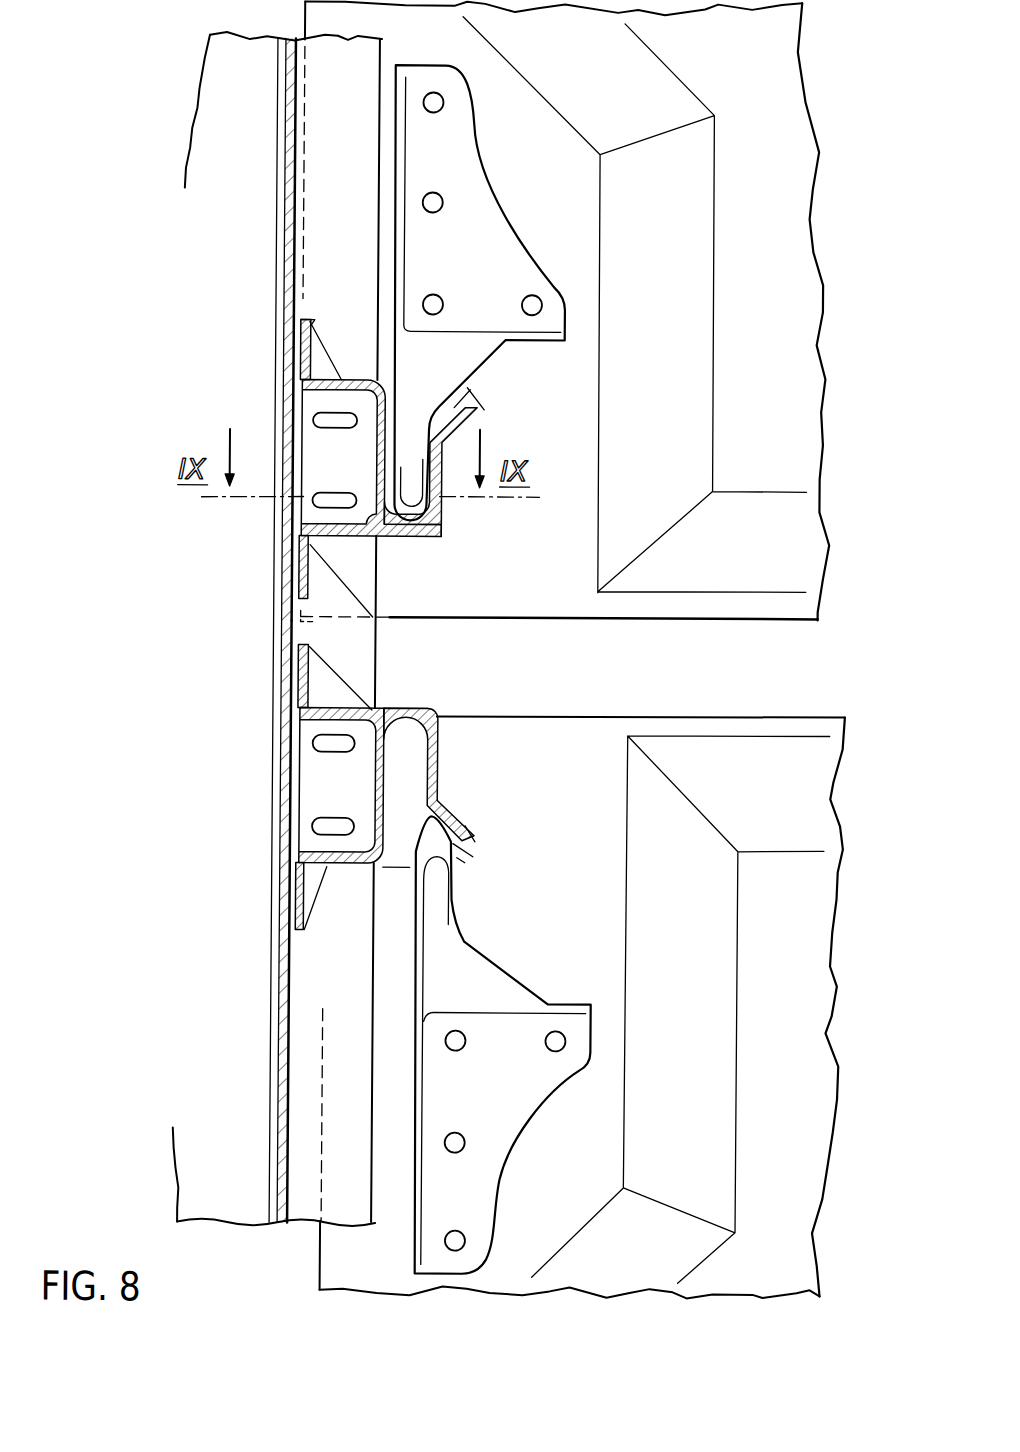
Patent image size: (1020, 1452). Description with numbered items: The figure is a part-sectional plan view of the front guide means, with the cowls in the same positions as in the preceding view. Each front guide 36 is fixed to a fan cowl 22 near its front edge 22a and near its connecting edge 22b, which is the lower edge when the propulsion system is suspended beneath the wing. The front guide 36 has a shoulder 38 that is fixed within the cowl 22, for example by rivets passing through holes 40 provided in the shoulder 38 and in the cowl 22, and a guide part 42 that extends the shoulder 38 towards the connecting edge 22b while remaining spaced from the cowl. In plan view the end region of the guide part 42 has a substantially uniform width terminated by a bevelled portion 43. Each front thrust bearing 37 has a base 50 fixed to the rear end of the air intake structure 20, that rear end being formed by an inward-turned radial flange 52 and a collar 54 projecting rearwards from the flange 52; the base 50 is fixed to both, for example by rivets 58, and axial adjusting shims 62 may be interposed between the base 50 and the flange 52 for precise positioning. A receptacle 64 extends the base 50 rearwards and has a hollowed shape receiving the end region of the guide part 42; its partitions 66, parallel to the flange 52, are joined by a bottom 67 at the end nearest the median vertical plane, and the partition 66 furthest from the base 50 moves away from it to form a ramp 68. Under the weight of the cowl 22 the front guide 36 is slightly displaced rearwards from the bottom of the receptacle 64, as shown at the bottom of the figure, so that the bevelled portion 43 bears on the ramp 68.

The air intake structure 20 is at (240, 40).
The fan cowl 22 is at (742, 622).
The front edge 22a is at (322, 1270).
The connecting edge 22b is at (577, 620).
The front guide 36 is at (575, 302).
The front thrust bearing 37 is at (387, 550).
The shoulder 38 is at (467, 192).
The holes 40 is at (426, 198).
The guide part 42 is at (441, 494).
The bevelled portion 43 is at (461, 850).
The base 50 is at (325, 571).
The radial flange 52 is at (291, 165).
The collar 54 is at (333, 972).
The rivets 58 is at (325, 353).
The axial adjusting shims 62 is at (300, 318).
The receptacle 64 is at (474, 400).
The partitions 66 is at (440, 758).
The bottom 67 is at (429, 540).
The ramp 68 is at (468, 824).